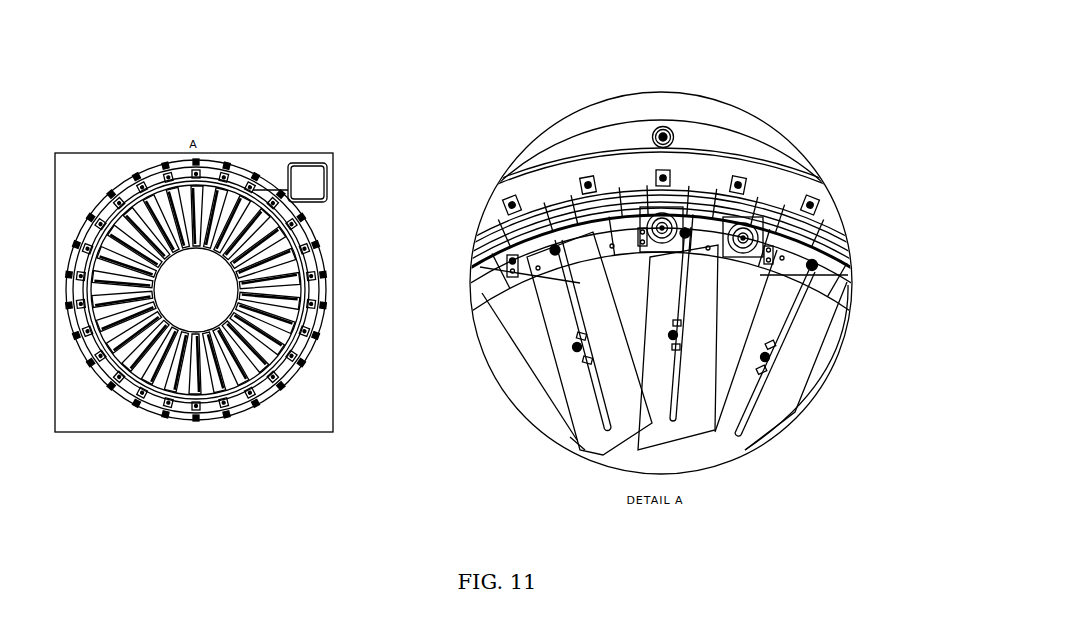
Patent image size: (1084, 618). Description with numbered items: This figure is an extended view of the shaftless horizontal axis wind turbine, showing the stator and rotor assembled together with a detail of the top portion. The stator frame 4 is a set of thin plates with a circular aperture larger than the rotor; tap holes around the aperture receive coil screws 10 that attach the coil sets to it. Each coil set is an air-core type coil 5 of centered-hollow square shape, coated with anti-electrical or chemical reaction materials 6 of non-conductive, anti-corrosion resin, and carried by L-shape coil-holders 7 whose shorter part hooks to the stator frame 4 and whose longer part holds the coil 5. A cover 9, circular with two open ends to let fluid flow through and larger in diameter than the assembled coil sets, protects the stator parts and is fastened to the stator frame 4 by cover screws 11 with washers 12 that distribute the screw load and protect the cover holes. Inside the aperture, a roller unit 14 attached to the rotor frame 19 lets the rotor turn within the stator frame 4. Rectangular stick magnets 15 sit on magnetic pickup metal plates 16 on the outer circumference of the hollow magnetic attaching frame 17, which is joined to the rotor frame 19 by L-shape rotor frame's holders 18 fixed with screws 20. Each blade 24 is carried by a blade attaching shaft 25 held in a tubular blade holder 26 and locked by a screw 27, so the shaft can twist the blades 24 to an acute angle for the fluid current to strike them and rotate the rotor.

The stator frame 4 is at (609, 110).
The air-core type coil 5 is at (598, 183).
The anti-electrical or chemical reaction materials 6 is at (558, 205).
The L-shape coil-holder 7 is at (740, 178).
The cover 9 is at (790, 162).
The coil screw 10 is at (507, 200).
The cover screw 11 is at (673, 130).
The washer 12 is at (656, 130).
The roller unit 14 is at (815, 268).
The magnet 15 is at (808, 203).
The magnetic pickup metal plate 16 is at (848, 247).
The hollow magnetic attaching frame 17 is at (498, 218).
The L-shape rotor frame's holder 18 is at (495, 285).
The rotor frame 19 is at (555, 250).
The screw 20 is at (477, 253).
The blade 24 is at (685, 420).
The blade attaching shaft 25 is at (682, 370).
The blade holder 26 is at (775, 370).
The screw 27 is at (770, 358).